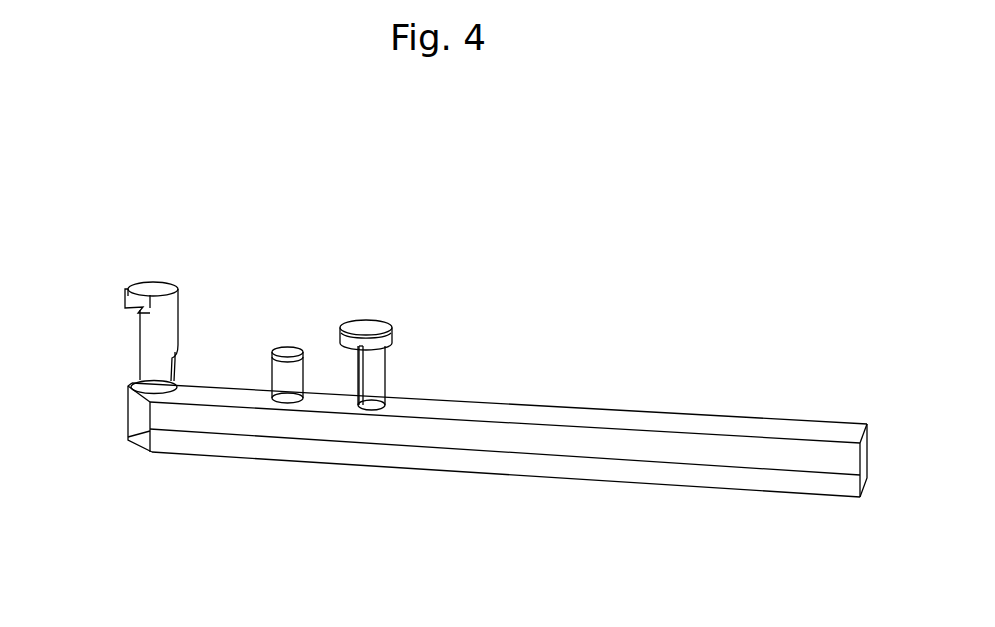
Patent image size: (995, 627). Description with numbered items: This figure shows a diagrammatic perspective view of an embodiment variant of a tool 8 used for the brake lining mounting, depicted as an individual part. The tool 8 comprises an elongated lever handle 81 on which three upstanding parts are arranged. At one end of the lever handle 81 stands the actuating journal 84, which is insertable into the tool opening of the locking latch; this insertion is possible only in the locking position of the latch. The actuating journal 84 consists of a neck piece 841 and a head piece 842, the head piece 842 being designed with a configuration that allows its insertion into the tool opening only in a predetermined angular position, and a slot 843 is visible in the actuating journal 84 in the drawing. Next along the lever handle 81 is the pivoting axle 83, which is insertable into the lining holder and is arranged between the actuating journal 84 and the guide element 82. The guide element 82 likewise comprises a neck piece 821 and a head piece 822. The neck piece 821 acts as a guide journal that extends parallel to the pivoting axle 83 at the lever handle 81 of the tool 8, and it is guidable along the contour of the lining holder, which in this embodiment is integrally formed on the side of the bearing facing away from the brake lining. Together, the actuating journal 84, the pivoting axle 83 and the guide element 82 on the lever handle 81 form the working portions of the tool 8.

The tool 8 is at (513, 508).
The lever handle 81 is at (705, 433).
The guide element 82 is at (392, 356).
The neck piece 821 is at (378, 382).
The head piece 822 is at (367, 327).
The pivoting axle 83 is at (283, 349).
The actuating journal 84 is at (180, 282).
The neck piece 841 is at (150, 357).
The head piece 842 is at (128, 288).
The slot 843 is at (198, 444).